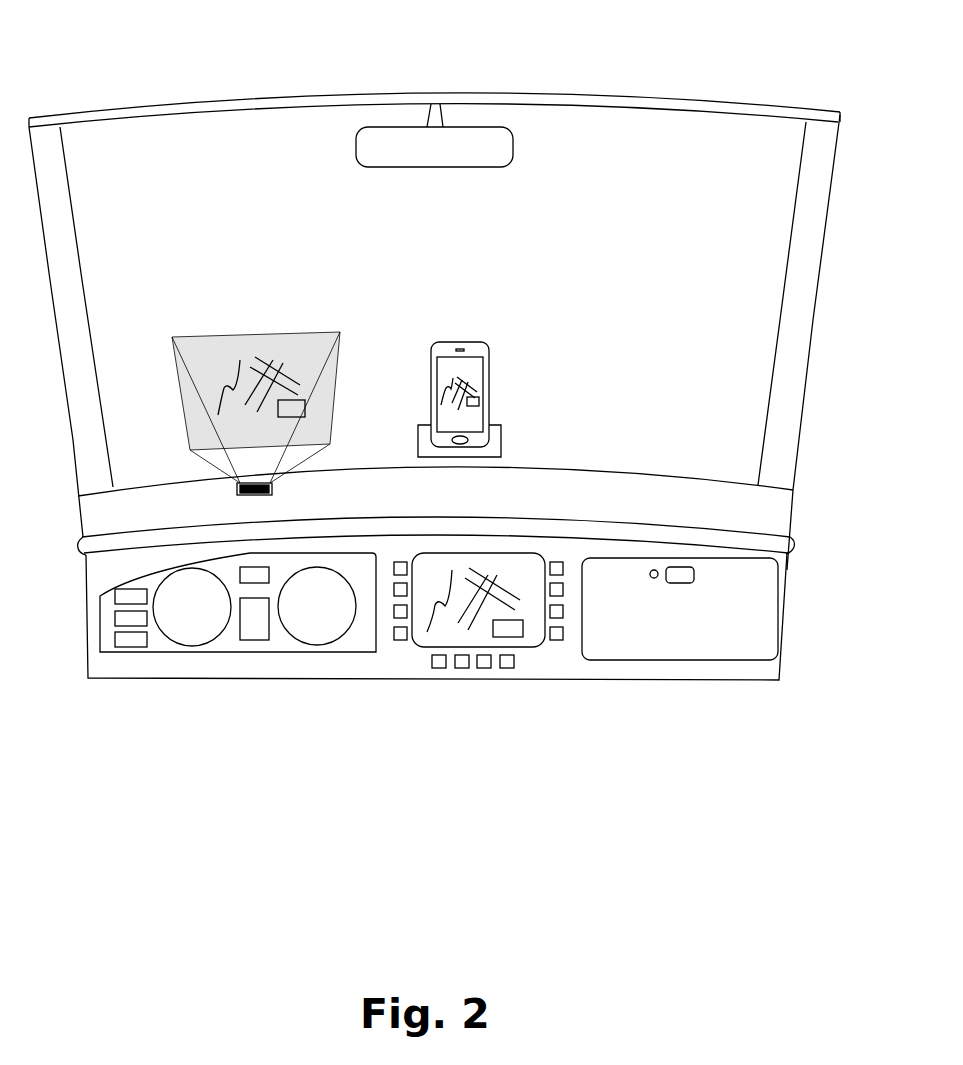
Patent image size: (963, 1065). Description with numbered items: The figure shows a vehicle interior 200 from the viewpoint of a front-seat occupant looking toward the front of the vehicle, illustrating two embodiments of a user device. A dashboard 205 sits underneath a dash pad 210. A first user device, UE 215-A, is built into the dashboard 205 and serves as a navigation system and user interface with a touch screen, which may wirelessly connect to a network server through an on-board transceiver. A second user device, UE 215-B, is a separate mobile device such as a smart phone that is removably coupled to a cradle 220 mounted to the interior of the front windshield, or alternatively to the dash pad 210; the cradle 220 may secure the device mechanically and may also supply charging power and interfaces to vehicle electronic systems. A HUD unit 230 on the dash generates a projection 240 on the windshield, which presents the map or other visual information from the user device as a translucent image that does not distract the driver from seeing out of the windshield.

The vehicle interior 200 is at (101, 75).
The dashboard 205 is at (123, 662).
The dash pad 210 is at (676, 452).
The UE (built-in user equipment) 215-A is at (432, 640).
The UE (mobile user equipment) 215-B is at (495, 364).
The cradle 220 is at (506, 447).
The Heads-Up Display (HUD) unit 230 is at (273, 490).
The projection 240 is at (277, 332).